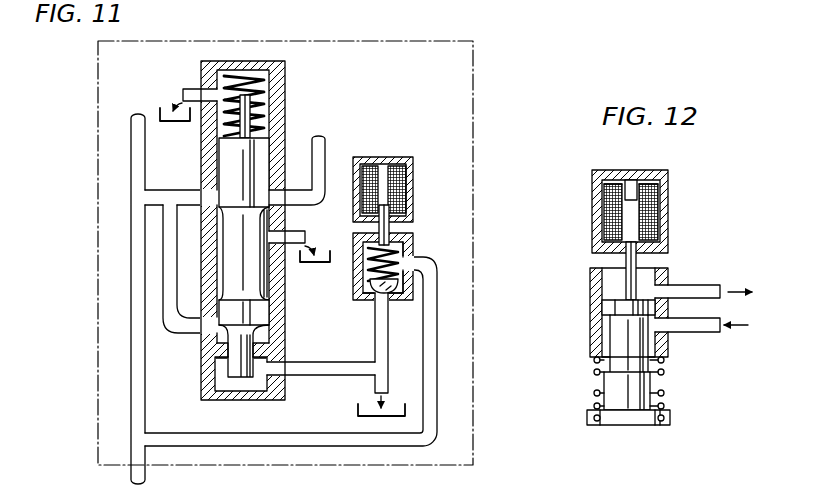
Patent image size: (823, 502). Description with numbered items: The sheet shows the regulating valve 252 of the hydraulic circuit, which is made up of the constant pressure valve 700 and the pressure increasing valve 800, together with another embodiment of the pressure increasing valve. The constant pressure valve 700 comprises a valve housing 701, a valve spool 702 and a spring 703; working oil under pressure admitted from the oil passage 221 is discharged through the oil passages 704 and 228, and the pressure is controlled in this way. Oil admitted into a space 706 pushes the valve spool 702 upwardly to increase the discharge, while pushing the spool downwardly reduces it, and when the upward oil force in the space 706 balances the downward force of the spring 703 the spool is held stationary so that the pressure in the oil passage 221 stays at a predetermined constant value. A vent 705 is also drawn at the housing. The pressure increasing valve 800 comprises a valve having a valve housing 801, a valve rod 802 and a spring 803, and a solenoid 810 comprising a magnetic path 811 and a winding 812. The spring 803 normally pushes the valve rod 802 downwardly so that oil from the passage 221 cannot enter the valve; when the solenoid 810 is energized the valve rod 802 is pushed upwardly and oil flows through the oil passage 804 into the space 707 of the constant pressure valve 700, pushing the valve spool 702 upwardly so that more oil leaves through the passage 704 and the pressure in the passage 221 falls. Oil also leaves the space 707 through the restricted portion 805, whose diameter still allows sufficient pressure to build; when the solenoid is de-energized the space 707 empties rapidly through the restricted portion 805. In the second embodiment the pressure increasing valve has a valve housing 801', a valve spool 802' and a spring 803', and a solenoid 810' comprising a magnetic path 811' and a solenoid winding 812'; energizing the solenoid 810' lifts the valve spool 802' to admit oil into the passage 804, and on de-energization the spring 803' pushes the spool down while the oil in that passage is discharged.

In FIG. 11, the constant pressure valve 700 is at (237, 216).
In FIG. 11, the valve housing 701 is at (286, 64).
In FIG. 11, the valve spool 702 is at (268, 163).
In FIG. 11, the spring 703 is at (258, 78).
In FIG. 11, the oil passage 704 is at (296, 233).
In FIG. 11, the vent port 705 is at (190, 86).
In FIG. 11, the space 706 is at (207, 345).
In FIG. 11, the space 707 is at (222, 388).
In FIG. 11, the oil passage 221 is at (131, 168).
In FIG. 12, the oil passage 221 is at (693, 333).
In FIG. 11, the oil passage 228 is at (326, 152).
In FIG. 11, the regulating valve 252 is at (473, 46).
In FIG. 11, the pressure increasing valve 800 is at (366, 237).
In FIG. 12, the pressure increasing valve 800 is at (652, 281).
In FIG. 11, the valve housing 801 is at (409, 255).
In FIG. 11, the valve rod 802 is at (349, 296).
In FIG. 11, the spring 803 is at (349, 269).
In FIG. 11, the oil passage 804 is at (337, 366).
In FIG. 12, the oil passage 804 is at (708, 283).
In FIG. 11, the restricted portion 805 is at (372, 385).
In FIG. 11, the solenoid 810 is at (407, 175).
In FIG. 11, the magnetic path 811 is at (392, 166).
In FIG. 11, the winding 812 is at (407, 159).
In FIG. 12, the valve housing 801' is at (660, 307).
In FIG. 12, the valve spool 802' is at (605, 398).
In FIG. 12, the spring 803' is at (668, 389).
In FIG. 12, the solenoid 810' is at (666, 211).
In FIG. 12, the magnetic path 811' is at (595, 195).
In FIG. 12, the solenoid winding 812' is at (669, 210).